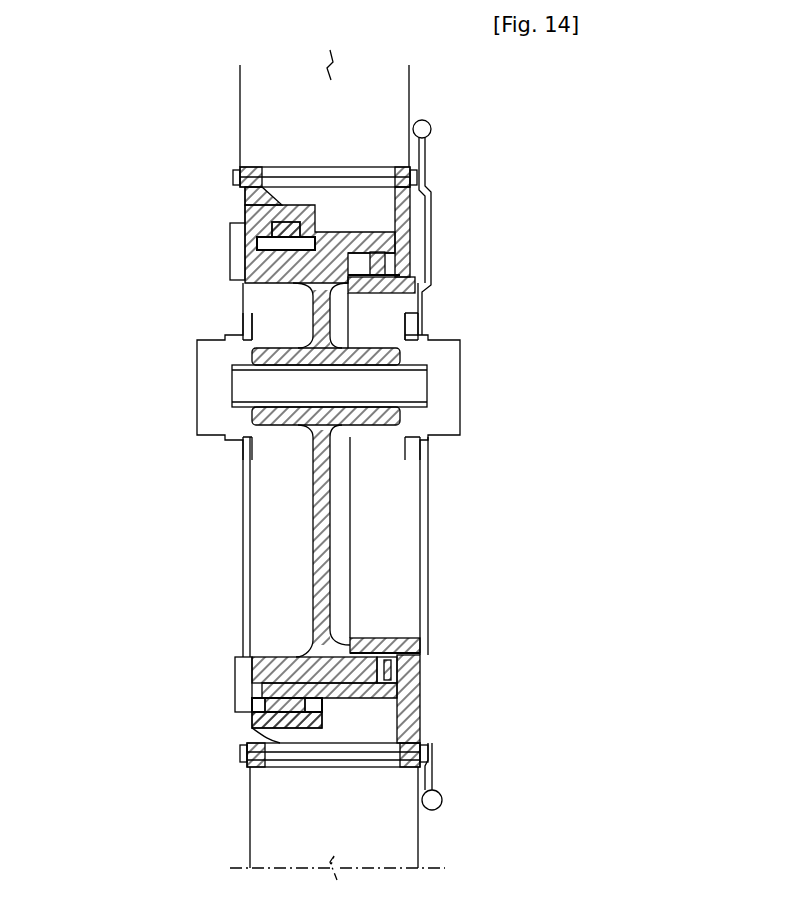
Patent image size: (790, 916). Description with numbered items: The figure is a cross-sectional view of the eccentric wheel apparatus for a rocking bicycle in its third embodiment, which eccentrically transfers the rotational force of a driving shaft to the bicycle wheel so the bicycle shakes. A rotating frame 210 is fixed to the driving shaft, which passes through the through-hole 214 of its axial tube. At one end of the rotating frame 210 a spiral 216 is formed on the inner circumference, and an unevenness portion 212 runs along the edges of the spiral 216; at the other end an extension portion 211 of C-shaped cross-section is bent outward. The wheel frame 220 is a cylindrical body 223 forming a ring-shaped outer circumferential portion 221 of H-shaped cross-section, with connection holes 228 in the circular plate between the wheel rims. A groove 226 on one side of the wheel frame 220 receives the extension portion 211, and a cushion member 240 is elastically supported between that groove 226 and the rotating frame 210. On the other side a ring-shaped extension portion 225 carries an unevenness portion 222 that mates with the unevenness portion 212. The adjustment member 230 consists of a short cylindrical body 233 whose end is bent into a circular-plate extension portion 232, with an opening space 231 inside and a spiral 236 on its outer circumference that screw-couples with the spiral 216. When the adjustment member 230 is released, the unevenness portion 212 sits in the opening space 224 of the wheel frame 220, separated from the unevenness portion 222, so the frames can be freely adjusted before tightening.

The rotating frame 210 is at (98, 188).
The extension portion 211 is at (243, 208).
The unevenness portion 212 is at (248, 270).
The spiral 216 is at (300, 300).
The through-hole 214 is at (230, 376).
The cushion member 240 is at (238, 182).
The adjustment member 230 is at (545, 258).
The extension portion 232 is at (425, 186).
The spiral 236 is at (420, 257).
The cylindrical body 233 is at (400, 297).
The opening space 231 is at (425, 331).
The wheel frame 220 is at (118, 618).
The extension portion 225 is at (318, 652).
The unevenness portion 222 is at (285, 706).
The opening space 224 is at (250, 679).
The groove 226 is at (285, 705).
The cylindrical body 223 is at (250, 735).
The outer circumferential portion 221 is at (250, 745).
The connection holes 228 is at (250, 763).